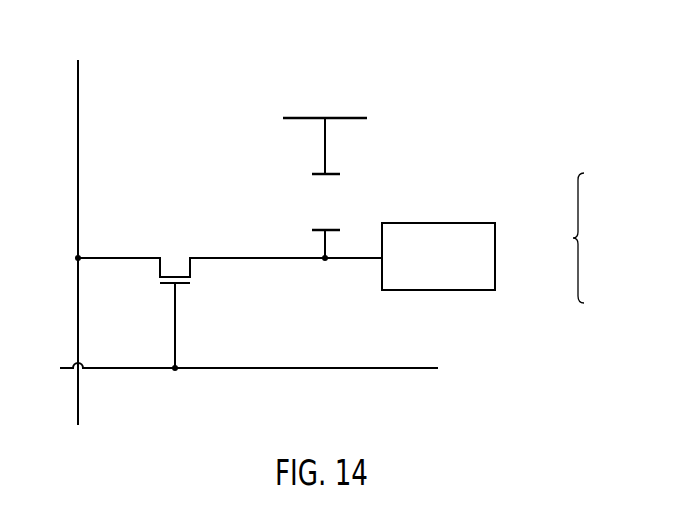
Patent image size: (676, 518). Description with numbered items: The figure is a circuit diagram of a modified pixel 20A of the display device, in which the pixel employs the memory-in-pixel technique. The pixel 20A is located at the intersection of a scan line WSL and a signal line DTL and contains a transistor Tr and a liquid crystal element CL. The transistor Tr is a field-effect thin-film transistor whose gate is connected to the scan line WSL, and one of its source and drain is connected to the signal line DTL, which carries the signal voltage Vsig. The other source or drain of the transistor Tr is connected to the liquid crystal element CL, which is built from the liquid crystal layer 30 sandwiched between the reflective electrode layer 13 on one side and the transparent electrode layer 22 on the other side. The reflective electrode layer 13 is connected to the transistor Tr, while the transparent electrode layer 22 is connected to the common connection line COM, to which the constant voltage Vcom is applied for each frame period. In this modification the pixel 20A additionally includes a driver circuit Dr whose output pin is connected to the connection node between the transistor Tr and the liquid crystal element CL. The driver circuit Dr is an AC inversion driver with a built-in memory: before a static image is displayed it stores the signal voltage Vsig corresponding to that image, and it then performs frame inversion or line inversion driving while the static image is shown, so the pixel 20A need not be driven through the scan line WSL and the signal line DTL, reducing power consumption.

The signal voltage Vsig is at (119, 256).
The transistor Tr is at (175, 255).
The scan line WSL is at (384, 363).
The signal line DTL is at (80, 393).
The common connection line COM is at (355, 113).
The constant voltage Vcom is at (307, 113).
The transparent electrode layer 22 is at (306, 171).
The liquid crystal layer 30 is at (306, 199).
The reflective electrode layer 13 is at (306, 228).
The liquid crystal element CL is at (349, 198).
The driver circuit Dr is at (468, 222).
The pixel 20A is at (600, 238).